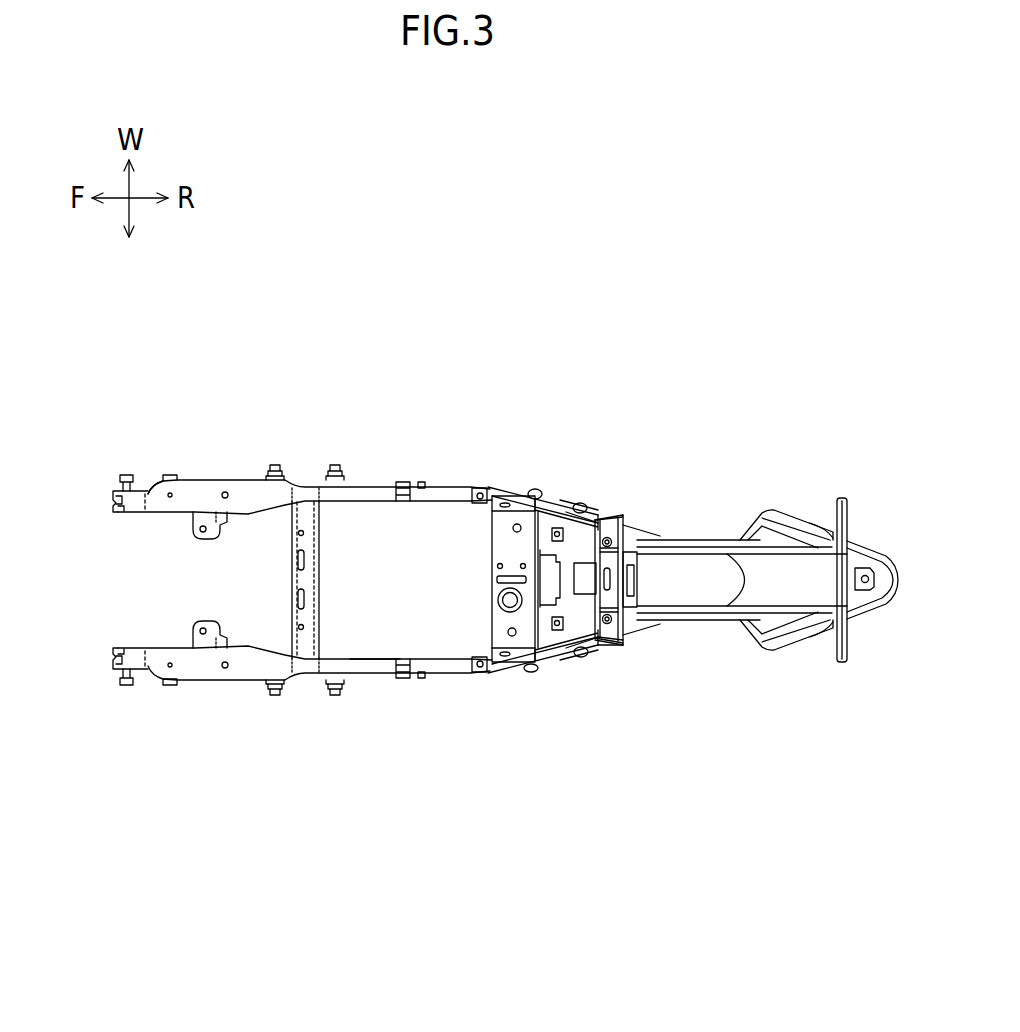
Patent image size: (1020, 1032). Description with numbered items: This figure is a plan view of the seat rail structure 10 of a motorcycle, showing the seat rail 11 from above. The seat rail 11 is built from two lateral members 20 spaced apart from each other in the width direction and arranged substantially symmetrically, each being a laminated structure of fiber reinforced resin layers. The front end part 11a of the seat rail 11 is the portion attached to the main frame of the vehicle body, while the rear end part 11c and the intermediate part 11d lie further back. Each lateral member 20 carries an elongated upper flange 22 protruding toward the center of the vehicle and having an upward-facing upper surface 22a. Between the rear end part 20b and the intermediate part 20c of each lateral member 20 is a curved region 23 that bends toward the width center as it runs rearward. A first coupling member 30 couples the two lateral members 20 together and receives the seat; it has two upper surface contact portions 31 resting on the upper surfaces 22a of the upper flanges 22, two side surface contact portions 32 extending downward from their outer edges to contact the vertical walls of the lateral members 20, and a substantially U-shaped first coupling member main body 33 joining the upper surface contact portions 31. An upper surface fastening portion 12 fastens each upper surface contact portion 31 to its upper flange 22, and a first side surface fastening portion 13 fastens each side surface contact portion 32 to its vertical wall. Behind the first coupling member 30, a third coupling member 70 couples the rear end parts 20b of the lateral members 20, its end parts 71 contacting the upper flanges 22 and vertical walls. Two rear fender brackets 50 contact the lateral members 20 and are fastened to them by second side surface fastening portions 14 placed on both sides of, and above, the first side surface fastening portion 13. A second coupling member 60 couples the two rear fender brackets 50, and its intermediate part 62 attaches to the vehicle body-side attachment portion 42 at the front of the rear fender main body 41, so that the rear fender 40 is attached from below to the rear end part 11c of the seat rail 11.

The seat rail structure 10 is at (155, 708).
The seat rail 11 is at (162, 482).
The front end part 11a is at (118, 495).
The rear end part 11c is at (615, 492).
The intermediate part 11d is at (376, 486).
The upper surface fastening portion 12 is at (472, 488).
The first side surface fastening portion 13 is at (585, 483).
The second side surface fastening portion 14 is at (540, 490).
The lateral member 20 is at (241, 487).
The rear end part 20b is at (623, 677).
The intermediate part 20c is at (374, 676).
The upper flange 22 is at (353, 656).
The upper surface 22a is at (268, 660).
The curved region 23 is at (505, 490).
The first coupling member 30 is at (493, 585).
The upper surface contact portion 31 is at (497, 490).
The side surface contact portion 32 is at (563, 483).
The first coupling member main body 33 is at (498, 556).
The rear fender 40 is at (783, 515).
The rear fender main body 41 is at (855, 618).
The vehicle body-side attachment portion 42 is at (663, 510).
The rear fender bracket 50 is at (592, 487).
The second coupling member 60 is at (625, 503).
The intermediate part 62 is at (503, 605).
The third coupling member 70 is at (672, 648).
The end part 71 is at (632, 520).